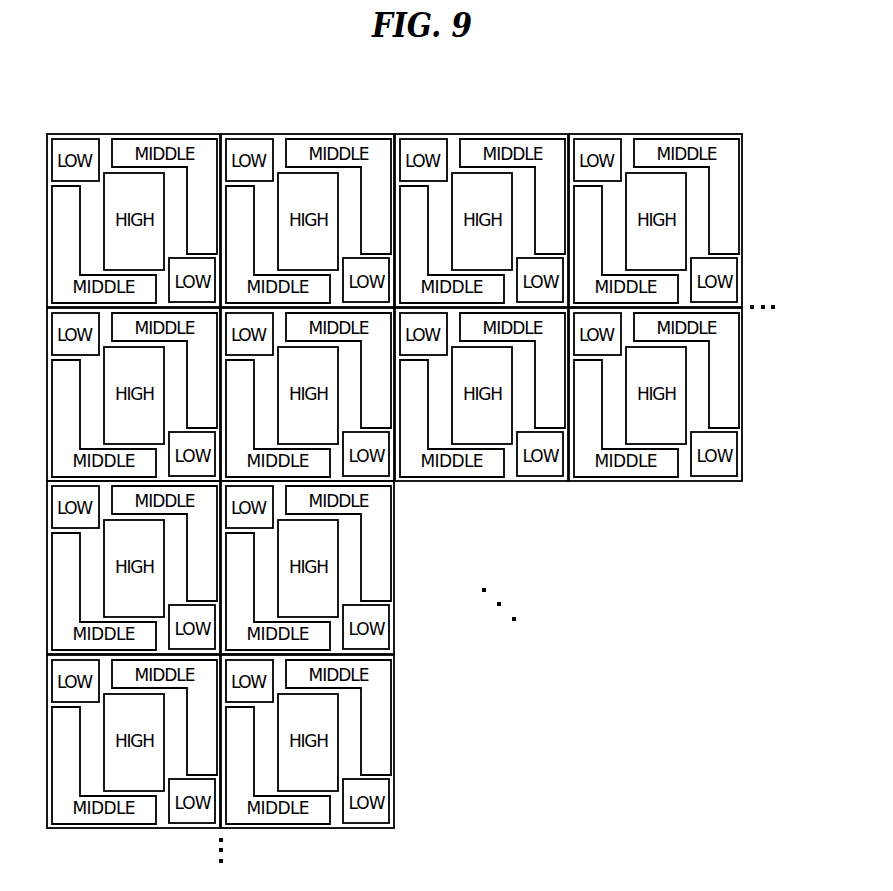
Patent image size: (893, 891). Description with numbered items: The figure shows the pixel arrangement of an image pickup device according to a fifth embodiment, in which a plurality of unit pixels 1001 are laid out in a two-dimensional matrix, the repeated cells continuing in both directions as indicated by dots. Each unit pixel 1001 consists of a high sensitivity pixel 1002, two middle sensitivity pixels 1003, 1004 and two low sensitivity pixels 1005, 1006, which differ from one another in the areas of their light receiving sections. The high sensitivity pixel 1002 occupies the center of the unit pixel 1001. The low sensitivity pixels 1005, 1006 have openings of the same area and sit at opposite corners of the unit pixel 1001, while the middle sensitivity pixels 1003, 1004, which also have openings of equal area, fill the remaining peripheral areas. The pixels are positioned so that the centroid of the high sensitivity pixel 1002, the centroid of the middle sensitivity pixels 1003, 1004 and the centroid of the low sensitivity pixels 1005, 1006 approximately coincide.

The unit pixel 1001 is at (162, 181).
The high sensitivity pixel 1002 is at (134, 181).
The middle sensitivity pixel 1003 is at (34, 65).
The middle sensitivity pixel 1004 is at (164, 154).
The low sensitivity pixel 1005 is at (75, 137).
The low sensitivity pixel 1006 is at (195, 197).